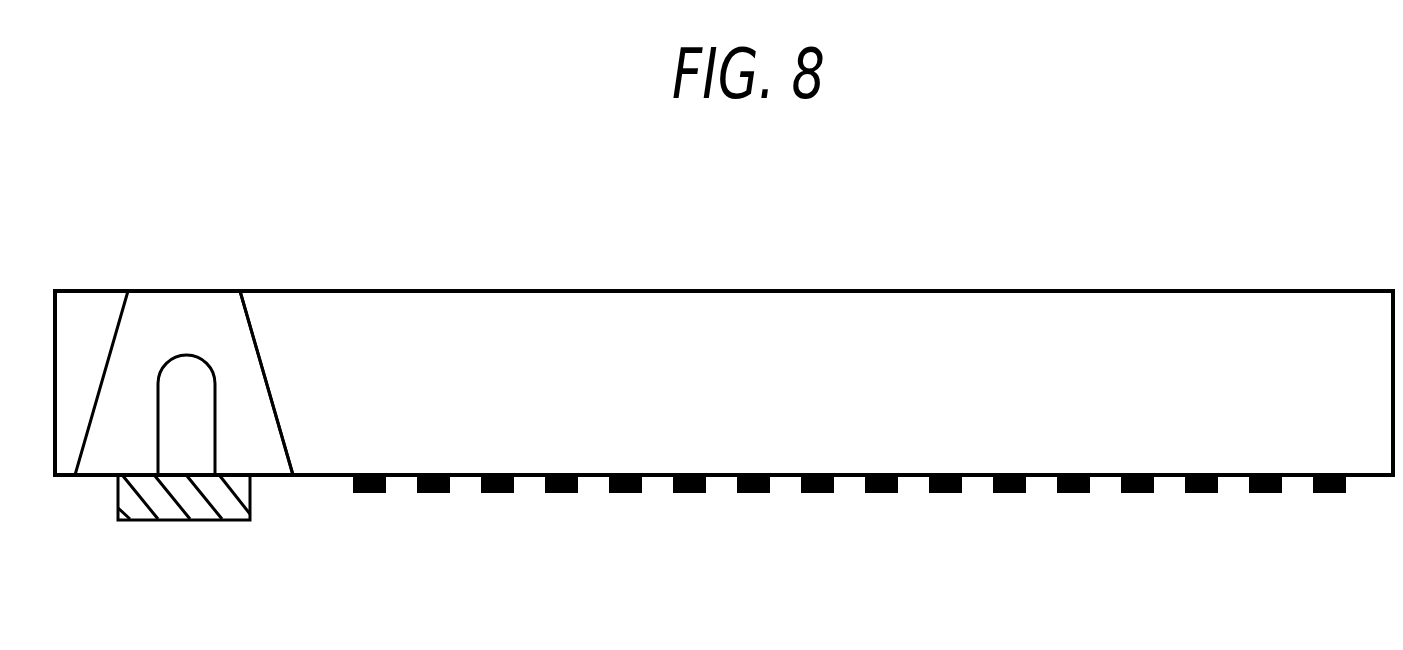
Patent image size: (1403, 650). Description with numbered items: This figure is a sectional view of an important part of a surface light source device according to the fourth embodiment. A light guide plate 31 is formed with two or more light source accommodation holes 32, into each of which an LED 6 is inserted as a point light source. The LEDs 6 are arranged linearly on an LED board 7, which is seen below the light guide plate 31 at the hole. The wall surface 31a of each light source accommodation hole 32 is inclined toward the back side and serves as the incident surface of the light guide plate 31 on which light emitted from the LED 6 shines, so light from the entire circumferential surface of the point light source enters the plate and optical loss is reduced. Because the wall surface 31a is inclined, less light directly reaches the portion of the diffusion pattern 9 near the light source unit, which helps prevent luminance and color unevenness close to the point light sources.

The light guide plate 31 is at (1268, 291).
The light source accommodation hole 32 is at (188, 285).
The wall surface 31a is at (254, 354).
The LED 6 is at (165, 375).
The LED board 7 is at (172, 521).
The diffusion pattern 9 is at (503, 493).